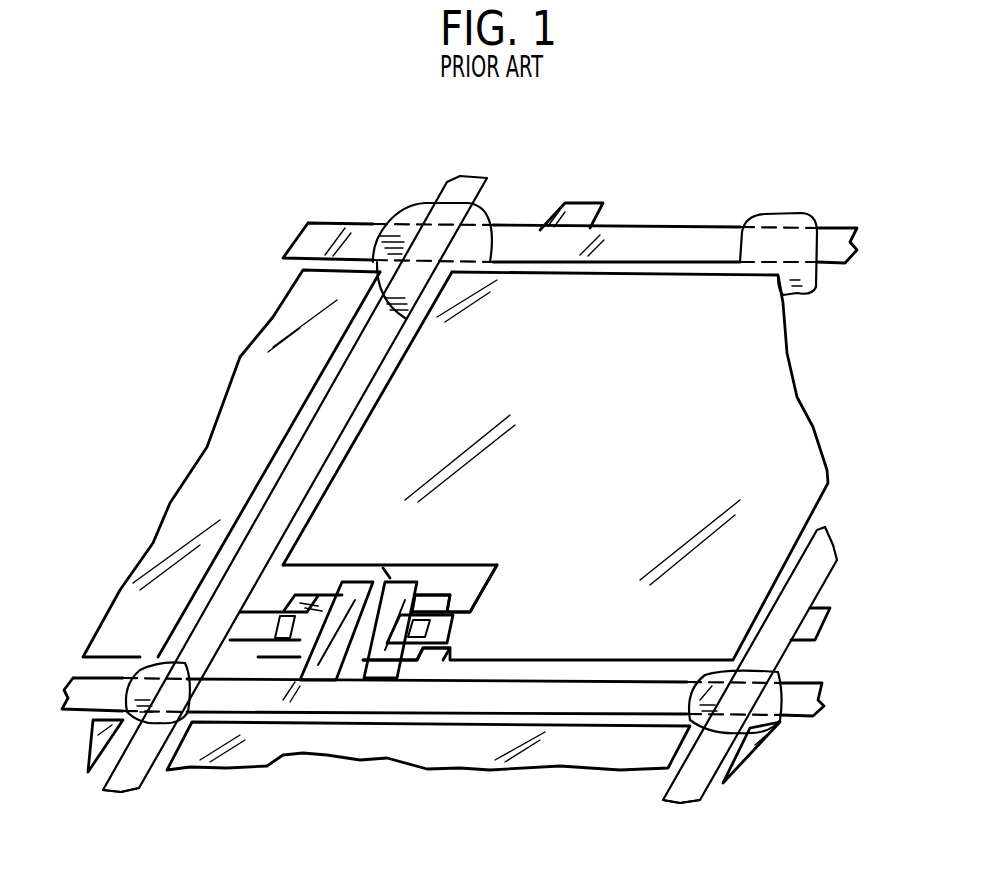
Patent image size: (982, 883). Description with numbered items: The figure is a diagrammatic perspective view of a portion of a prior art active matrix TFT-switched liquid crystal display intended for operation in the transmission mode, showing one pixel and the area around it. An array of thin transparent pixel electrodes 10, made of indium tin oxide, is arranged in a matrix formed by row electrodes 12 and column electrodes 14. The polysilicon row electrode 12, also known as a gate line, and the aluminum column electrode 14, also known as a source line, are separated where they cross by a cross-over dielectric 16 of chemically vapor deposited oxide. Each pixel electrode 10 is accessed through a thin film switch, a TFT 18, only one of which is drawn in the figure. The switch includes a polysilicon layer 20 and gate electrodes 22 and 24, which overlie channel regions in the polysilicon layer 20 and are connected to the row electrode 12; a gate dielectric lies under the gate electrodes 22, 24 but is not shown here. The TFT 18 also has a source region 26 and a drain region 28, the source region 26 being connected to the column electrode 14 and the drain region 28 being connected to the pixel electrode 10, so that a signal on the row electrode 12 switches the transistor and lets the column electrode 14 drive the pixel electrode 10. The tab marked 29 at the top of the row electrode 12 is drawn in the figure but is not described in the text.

The pixel electrode 10 is at (157, 542).
The row electrode 12 is at (302, 232).
The column electrode 14 is at (127, 780).
The cross-over dielectric 16 is at (490, 208).
The TFT 18 is at (395, 565).
The polysilicon layer 20 is at (387, 663).
The gate electrode 22 is at (353, 580).
The gate electrode 24 is at (417, 580).
The source region 26 is at (308, 590).
The drain region 28 is at (442, 598).
The connection tab 29 is at (628, 222).